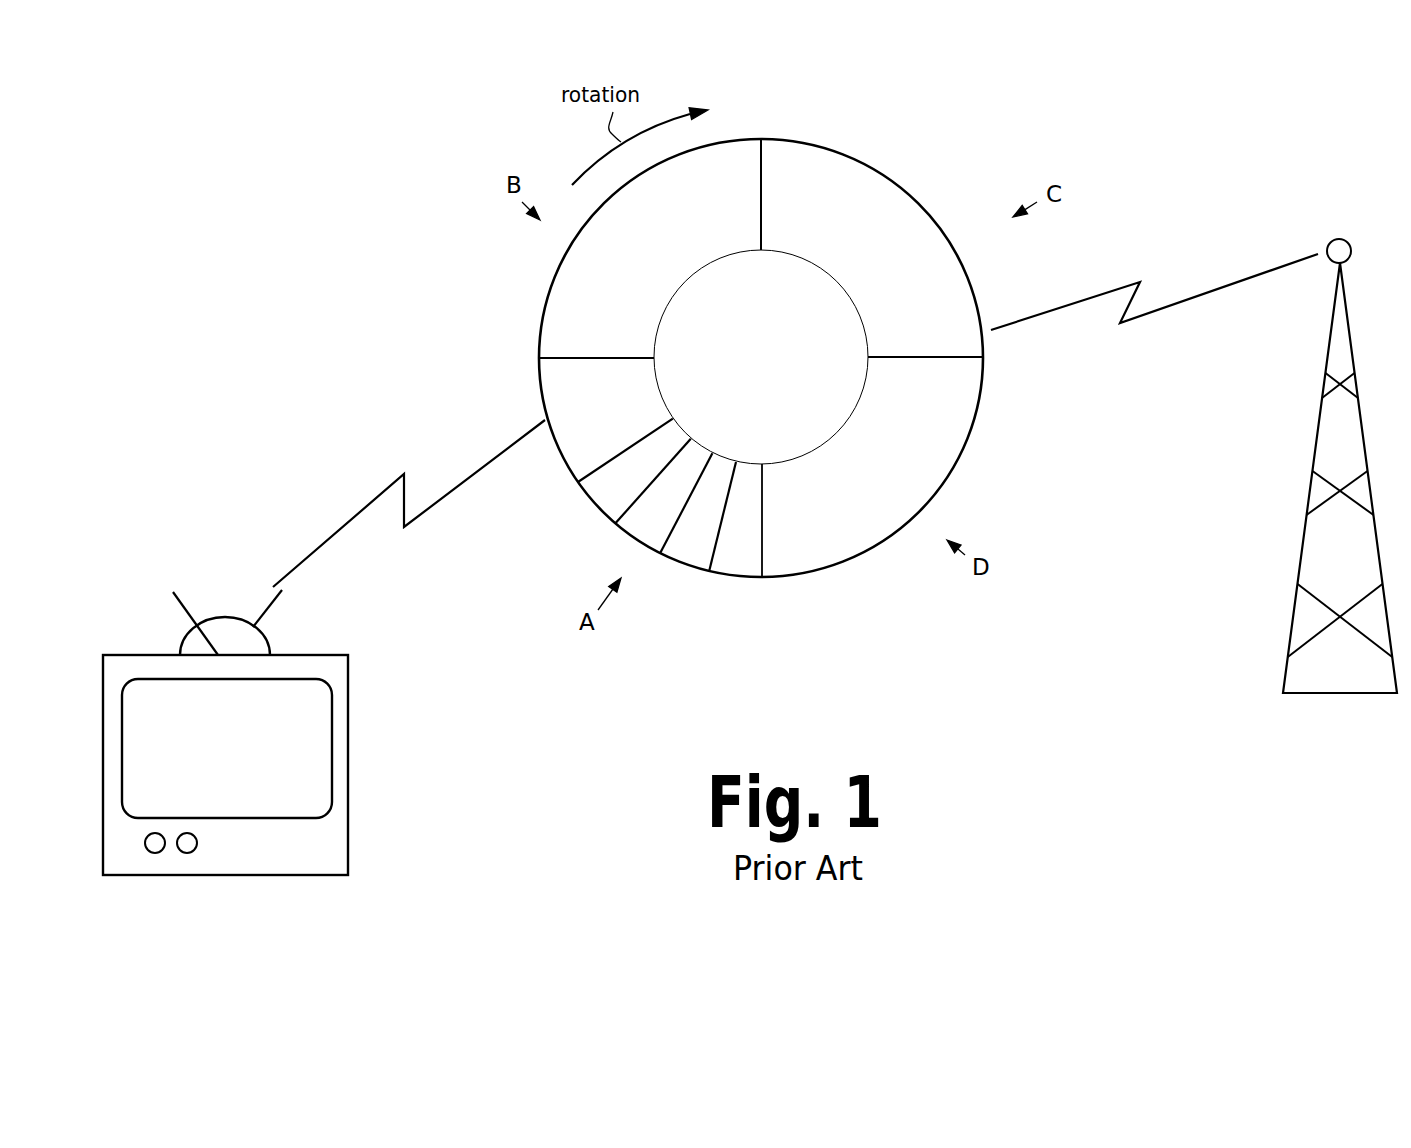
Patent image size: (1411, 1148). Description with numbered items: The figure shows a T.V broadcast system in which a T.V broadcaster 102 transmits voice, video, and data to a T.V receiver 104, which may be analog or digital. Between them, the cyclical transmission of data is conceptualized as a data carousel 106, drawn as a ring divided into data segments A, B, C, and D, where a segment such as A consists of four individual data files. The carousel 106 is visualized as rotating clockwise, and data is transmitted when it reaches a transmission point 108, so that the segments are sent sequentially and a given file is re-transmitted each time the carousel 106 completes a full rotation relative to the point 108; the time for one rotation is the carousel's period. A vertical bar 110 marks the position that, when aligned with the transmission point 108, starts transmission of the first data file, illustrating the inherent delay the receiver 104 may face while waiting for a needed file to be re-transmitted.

The T.V broadcaster 102 is at (1297, 547).
The T.V receiver 104 is at (348, 735).
The data carousel 106 is at (808, 139).
The transmission point 108 is at (762, 576).
The vertical bar 110 is at (766, 506).